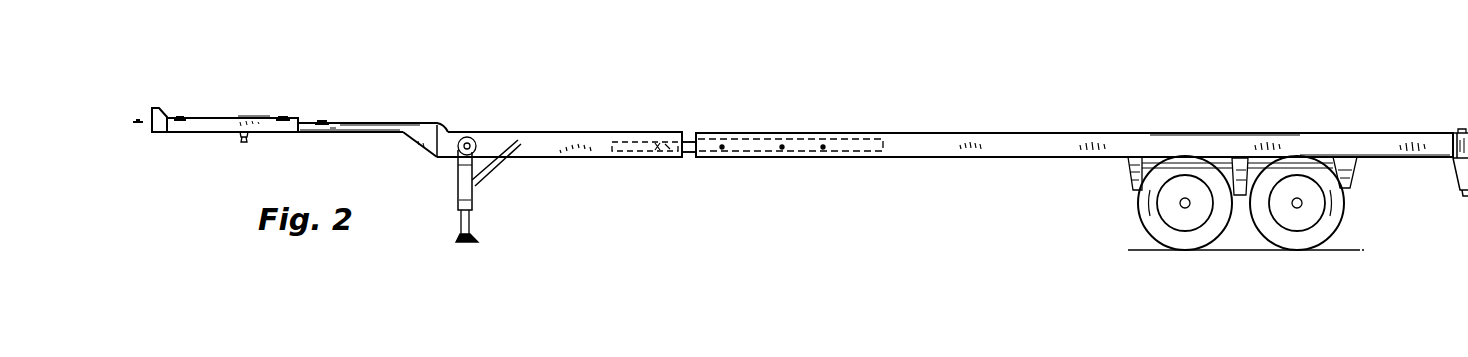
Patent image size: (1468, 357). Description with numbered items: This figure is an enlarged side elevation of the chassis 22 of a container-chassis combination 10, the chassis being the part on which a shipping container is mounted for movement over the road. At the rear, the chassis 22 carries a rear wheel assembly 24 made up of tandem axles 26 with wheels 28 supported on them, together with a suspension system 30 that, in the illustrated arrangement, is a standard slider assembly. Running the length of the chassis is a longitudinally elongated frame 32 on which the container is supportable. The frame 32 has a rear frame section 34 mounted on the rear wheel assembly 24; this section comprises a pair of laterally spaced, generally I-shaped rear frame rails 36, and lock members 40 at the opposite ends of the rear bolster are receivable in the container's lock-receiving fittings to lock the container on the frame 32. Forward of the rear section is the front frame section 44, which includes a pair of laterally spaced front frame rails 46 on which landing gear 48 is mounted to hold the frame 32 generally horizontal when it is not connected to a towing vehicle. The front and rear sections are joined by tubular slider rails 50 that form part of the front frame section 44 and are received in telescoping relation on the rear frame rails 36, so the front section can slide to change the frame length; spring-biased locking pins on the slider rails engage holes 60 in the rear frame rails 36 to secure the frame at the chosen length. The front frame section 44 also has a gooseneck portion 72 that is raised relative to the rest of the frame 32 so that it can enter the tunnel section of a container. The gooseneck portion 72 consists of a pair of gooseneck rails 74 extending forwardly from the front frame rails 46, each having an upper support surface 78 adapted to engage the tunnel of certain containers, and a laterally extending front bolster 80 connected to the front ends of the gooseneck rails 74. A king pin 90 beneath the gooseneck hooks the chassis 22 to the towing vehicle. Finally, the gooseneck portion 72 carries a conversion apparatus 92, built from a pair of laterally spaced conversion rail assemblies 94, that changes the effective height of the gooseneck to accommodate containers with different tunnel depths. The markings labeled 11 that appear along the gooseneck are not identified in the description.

The container-chassis combination 10 is at (138, 120).
The second position marker 11 is at (283, 118).
The chassis 22 is at (1074, 129).
The rear wheel assembly 24 is at (1255, 219).
The tandem axles 26 is at (1182, 207).
The wheels 28 is at (1145, 203).
The suspension system 30 is at (1118, 172).
The frame 32 is at (1025, 130).
The rear frame section 34 is at (1219, 134).
The rear frame rails 36 is at (1378, 135).
The lock members 40 is at (1462, 128).
The front frame section 44 is at (552, 132).
The front frame rails 46 is at (571, 152).
The landing gear 48 is at (452, 226).
The slider rails 50 is at (686, 140).
The holes 60 is at (722, 149).
The gooseneck portion 72 is at (392, 119).
The gooseneck rails 74 is at (369, 133).
The upper support surface 78 is at (355, 123).
The front bolster 80 is at (158, 138).
The king pin 90 is at (244, 143).
The conversion apparatus 92 is at (219, 112).
The conversion rail assemblies 94 is at (243, 122).